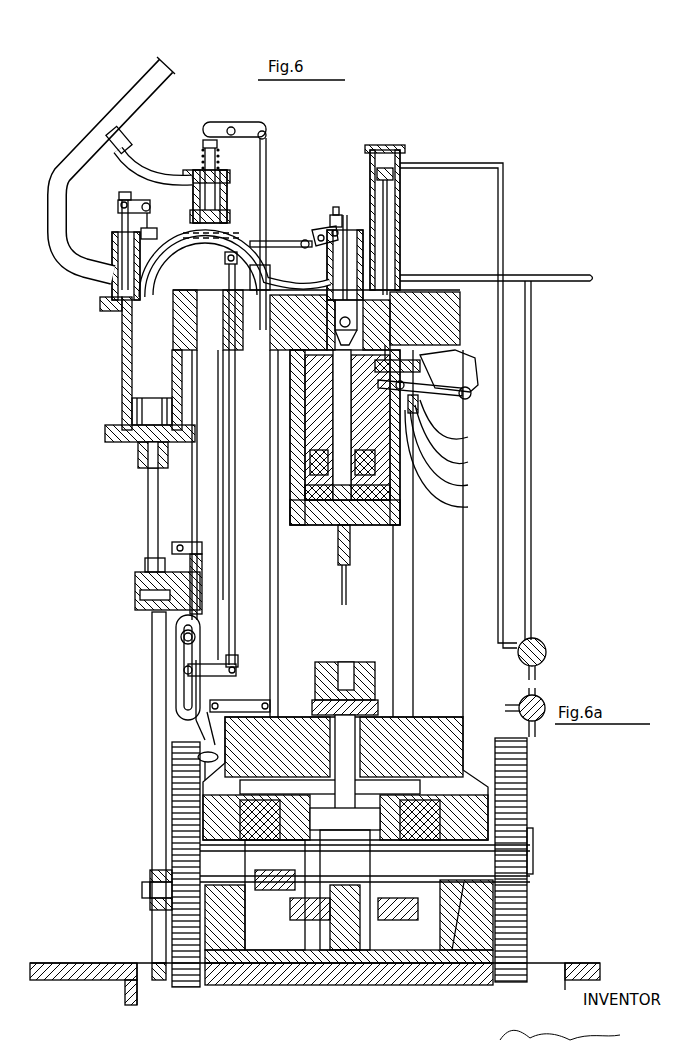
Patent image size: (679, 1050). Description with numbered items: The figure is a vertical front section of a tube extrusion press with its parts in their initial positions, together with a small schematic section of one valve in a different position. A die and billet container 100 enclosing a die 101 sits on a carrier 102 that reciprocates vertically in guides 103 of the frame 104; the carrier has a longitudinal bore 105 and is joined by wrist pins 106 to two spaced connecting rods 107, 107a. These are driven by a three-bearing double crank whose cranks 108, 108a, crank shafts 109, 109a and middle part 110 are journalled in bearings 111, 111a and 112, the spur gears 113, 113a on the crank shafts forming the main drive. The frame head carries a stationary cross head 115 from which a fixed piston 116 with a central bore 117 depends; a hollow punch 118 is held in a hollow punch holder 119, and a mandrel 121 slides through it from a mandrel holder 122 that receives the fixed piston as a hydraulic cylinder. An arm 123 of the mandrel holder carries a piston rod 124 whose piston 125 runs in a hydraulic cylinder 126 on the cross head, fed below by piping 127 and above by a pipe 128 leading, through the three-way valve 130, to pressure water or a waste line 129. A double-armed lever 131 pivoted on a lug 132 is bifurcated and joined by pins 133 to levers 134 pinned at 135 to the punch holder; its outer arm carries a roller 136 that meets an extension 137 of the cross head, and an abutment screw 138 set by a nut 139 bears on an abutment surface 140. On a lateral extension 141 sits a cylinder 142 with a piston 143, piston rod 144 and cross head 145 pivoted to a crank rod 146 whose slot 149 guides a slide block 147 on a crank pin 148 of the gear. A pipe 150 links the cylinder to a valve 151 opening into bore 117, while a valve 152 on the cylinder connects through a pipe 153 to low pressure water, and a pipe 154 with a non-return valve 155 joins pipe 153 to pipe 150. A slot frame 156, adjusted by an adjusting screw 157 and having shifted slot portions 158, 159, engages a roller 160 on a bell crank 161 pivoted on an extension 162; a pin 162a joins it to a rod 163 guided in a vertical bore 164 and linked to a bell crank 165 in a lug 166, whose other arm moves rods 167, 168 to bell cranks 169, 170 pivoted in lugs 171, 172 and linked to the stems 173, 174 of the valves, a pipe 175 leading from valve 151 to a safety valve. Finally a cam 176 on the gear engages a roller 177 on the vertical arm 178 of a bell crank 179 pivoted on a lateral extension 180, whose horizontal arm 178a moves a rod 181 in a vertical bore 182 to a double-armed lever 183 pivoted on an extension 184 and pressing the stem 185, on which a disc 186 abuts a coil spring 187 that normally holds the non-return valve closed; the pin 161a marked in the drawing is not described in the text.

In FIG. 6, the die and billet container 100 is at (362, 662).
In FIG. 6, the die 101 is at (340, 672).
In FIG. 6, the carrier 102 is at (357, 740).
In FIG. 6, the guides 103 is at (290, 568).
In FIG. 6, the frame 104 is at (455, 570).
In FIG. 6, the longitudinal bore 105 is at (380, 708).
In FIG. 6, the wrist pins 106 is at (410, 786).
In FIG. 6, the connecting rod 107 is at (300, 826).
In FIG. 6, the connecting rod 107a is at (405, 830).
In FIG. 6, the crank 108 is at (302, 920).
In FIG. 6, the crank 108a is at (398, 920).
In FIG. 6, the crank shaft 109 is at (213, 860).
In FIG. 6, the crank shaft 109a is at (500, 860).
In FIG. 6, the middle part 110 is at (352, 895).
In FIG. 6, the bearing 111 is at (270, 950).
In FIG. 6, the bearing 111a is at (460, 890).
In FIG. 6, the bearing 112 is at (330, 950).
In FIG. 6, the spur gear 113 is at (180, 935).
In FIG. 6, the spur gear 113a is at (522, 895).
In FIG. 6, the stationary cross head 115 is at (455, 300).
In FIG. 6, the fixed piston 116 is at (318, 462).
In FIG. 6, the central bore 117 is at (318, 485).
In FIG. 6, the hollow punch 118 is at (350, 555).
In FIG. 6, the hollow punch holder 119 is at (405, 527).
In FIG. 6, the mandrel 121 is at (346, 590).
In FIG. 6, the mandrel holder 122 is at (315, 505).
In FIG. 6, the arm 123 is at (415, 362).
In FIG. 6, the piston rod 124 is at (388, 205).
In FIG. 6, the piston 125 is at (393, 175).
In FIG. 6, the hydraulic cylinder 126 is at (400, 222).
In FIG. 6, the piping 127 is at (430, 275).
In FIG. 6A, the piping 127 is at (512, 704).
In FIG. 6, the pipe 128 is at (460, 163).
In FIG. 6A, the pipe 128 is at (528, 692).
In FIG. 6, the waste line 129 is at (540, 668).
In FIG. 6A, the waste line 129 is at (536, 735).
In FIG. 6, the 3-way valve 130 is at (538, 640).
In FIG. 6A, the 3-way valve 130 is at (524, 714).
In FIG. 6, the double-armed lever 131 is at (459, 422).
In FIG. 6, the lug 132 is at (452, 463).
In FIG. 6, the pins 133 is at (320, 380).
In FIG. 6, the levers 134 is at (325, 400).
In FIG. 6, the pins 135 is at (340, 425).
In FIG. 6, the roller 136 is at (430, 400).
In FIG. 6, the extension 137 is at (472, 390).
In FIG. 6, the abutment screw 138 is at (454, 452).
In FIG. 6, the nut 139 is at (457, 438).
In FIG. 6, the abutment surface 140 is at (478, 368).
In FIG. 6, the lateral extension 141 is at (205, 345).
In FIG. 6, the cylinder 142 is at (122, 357).
In FIG. 6, the piston 143 is at (132, 404).
In FIG. 6, the piston rod 144 is at (148, 490).
In FIG. 6, the cross head 145 is at (140, 583).
In FIG. 6, the crank rod 146 is at (160, 829).
In FIG. 6, the slide block 147 is at (150, 874).
In FIG. 6, the crank pin 148 is at (155, 890).
In FIG. 6, the slot 149 is at (158, 923).
In FIG. 6, the pipe 150 is at (172, 278).
In FIG. 6, the valve 151 is at (340, 230).
In FIG. 6, the valve 152 is at (115, 248).
In FIG. 6, the pipe 153 is at (50, 186).
In FIG. 6, the pipe 154 is at (140, 148).
In FIG. 6, the non-return valve 155 is at (225, 200).
In FIG. 6, the slot frame 156 is at (178, 680).
In FIG. 6, the adjusting screw 157 is at (196, 560).
In FIG. 6, the slot portion 158 is at (184, 650).
In FIG. 6, the slot portion 159 is at (178, 700).
In FIG. 6, the roller 160 is at (184, 638).
In FIG. 6, the bell crank 161 is at (220, 668).
In FIG. 6, the pin 161a is at (184, 668).
In FIG. 6, the lateral extension 162 is at (236, 655).
In FIG. 6, the pin 162a is at (253, 660).
In FIG. 6, the rod 163 is at (228, 475).
In FIG. 6, the vertical bore 164 is at (218, 352).
In FIG. 6, the bell crank 165 is at (225, 256).
In FIG. 6, the lug 166 is at (260, 281).
In FIG. 6, the rod 167 is at (255, 235).
In FIG. 6, the rod 168 is at (283, 240).
In FIG. 6, the bell crank 169 is at (150, 208).
In FIG. 6, the bell crank 170 is at (318, 228).
In FIG. 6, the lug 171 is at (121, 225).
In FIG. 6, the lug 172 is at (332, 215).
In FIG. 6, the stem 173 is at (105, 272).
In FIG. 6, the stem 174 is at (347, 260).
In FIG. 6, the pipe 175 is at (350, 322).
In FIG. 6, the cam 176 is at (225, 940).
In FIG. 6, the roller 177 is at (185, 770).
In FIG. 6, the vertical arm 178 is at (200, 758).
In FIG. 6, the horizontal arm 178a is at (245, 700).
In FIG. 6, the bell crank 179 is at (195, 730).
In FIG. 6, the lateral extension 180 is at (210, 735).
In FIG. 6, the rod 181 is at (268, 588).
In FIG. 6, the vertical bore 182 is at (262, 352).
In FIG. 6, the double-armed lever 183 is at (248, 126).
In FIG. 6, the extension 184 is at (250, 138).
In FIG. 6, the stem 185 is at (195, 178).
In FIG. 6, the disc 186 is at (205, 140).
In FIG. 6, the coil spring 187 is at (205, 140).